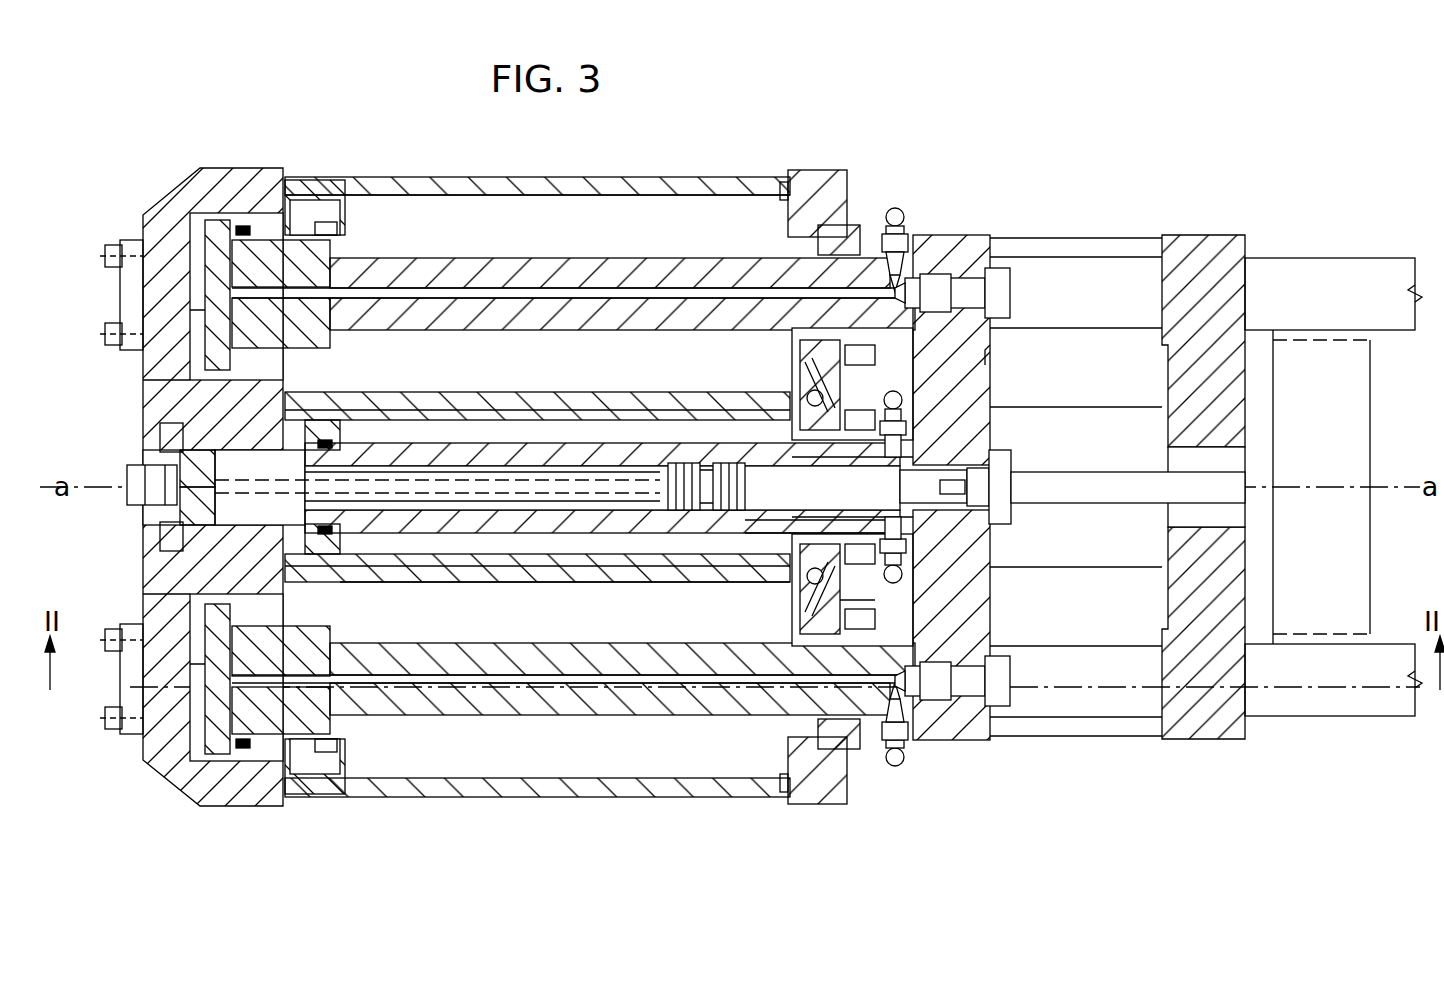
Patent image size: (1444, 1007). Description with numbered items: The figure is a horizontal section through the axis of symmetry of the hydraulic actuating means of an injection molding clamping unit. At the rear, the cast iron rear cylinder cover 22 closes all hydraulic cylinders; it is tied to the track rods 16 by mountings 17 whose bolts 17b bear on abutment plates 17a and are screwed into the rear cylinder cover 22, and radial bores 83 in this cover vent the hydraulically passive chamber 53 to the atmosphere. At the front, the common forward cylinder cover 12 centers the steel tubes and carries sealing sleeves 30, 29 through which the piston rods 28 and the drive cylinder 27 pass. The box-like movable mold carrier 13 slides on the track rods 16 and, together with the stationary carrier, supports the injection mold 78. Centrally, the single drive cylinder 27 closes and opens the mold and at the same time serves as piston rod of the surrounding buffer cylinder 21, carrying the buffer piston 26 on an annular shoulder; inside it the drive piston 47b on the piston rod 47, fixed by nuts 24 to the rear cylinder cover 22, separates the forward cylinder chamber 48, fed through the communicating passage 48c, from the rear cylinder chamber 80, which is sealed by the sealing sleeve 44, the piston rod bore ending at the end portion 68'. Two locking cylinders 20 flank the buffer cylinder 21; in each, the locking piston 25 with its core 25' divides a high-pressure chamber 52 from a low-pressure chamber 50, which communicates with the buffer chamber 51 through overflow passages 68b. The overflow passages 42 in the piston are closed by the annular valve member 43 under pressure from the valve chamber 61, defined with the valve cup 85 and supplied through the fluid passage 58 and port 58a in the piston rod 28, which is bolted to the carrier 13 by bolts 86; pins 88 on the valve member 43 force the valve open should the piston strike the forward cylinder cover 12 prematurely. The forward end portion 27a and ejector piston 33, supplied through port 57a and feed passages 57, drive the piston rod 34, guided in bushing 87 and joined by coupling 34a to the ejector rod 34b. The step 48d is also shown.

The forward cylinder cover 12 is at (820, 190).
The movable mold carrier 13 is at (1190, 290).
The track rod 16 is at (1072, 690).
The mounting 17 is at (105, 290).
The abutment plate 17a is at (120, 688).
The bolt 17b is at (120, 718).
The locking cylinder 20 is at (495, 190).
The buffer cylinder 21 is at (470, 562).
The rear cylinder cover 22 is at (190, 755).
The nut 24 is at (150, 480).
The locking piston 25 is at (314, 452).
The core 25' is at (319, 487).
The buffer piston 26 is at (325, 548).
The drive cylinder 27 is at (610, 405).
The forward end portion of the cylinder 27a is at (715, 470).
The piston rod 28 is at (527, 272).
The sealing sleeve 29 is at (875, 600).
The sealing sleeve 30 is at (865, 235).
The ejector piston 33 is at (745, 512).
The piston rod 34 is at (968, 522).
The coupling 34a is at (992, 455).
The ejector rod 34b is at (1120, 490).
The overflow passage 42 is at (330, 205).
The annular valve member 43 is at (240, 222).
The sealing sleeve 44 is at (210, 520).
The piston rod 47 is at (490, 470).
The drive piston 47b is at (668, 505).
The forward cylinder chamber 48 is at (675, 470).
The communicating passage 48c is at (730, 465).
The step 48d is at (990, 365).
The low-pressure chamber 50 is at (622, 225).
The buffer chamber 51 is at (424, 540).
The high-pressure chamber 52 is at (160, 365).
The hydraulically passive chamber 53 is at (195, 500).
The feed passage 57 is at (735, 515).
The port 57a is at (880, 560).
The fluid passage 58 is at (708, 294).
The port 58a is at (902, 212).
The valve chamber 61 is at (235, 228).
The end portion of communicating passage bore 68' is at (482, 563).
The overflow passage 68b is at (800, 400).
The injection mold 78 is at (1325, 365).
The rear cylinder chamber 80 is at (540, 475).
The radial bore 83 is at (178, 437).
The valve cup 85 is at (200, 312).
The bolt 86 is at (998, 292).
The bushing 87 is at (905, 440).
The pin 88 is at (340, 225).